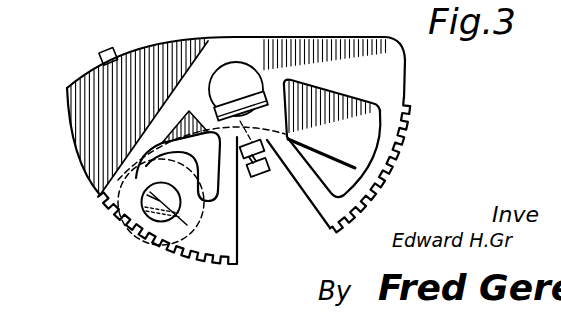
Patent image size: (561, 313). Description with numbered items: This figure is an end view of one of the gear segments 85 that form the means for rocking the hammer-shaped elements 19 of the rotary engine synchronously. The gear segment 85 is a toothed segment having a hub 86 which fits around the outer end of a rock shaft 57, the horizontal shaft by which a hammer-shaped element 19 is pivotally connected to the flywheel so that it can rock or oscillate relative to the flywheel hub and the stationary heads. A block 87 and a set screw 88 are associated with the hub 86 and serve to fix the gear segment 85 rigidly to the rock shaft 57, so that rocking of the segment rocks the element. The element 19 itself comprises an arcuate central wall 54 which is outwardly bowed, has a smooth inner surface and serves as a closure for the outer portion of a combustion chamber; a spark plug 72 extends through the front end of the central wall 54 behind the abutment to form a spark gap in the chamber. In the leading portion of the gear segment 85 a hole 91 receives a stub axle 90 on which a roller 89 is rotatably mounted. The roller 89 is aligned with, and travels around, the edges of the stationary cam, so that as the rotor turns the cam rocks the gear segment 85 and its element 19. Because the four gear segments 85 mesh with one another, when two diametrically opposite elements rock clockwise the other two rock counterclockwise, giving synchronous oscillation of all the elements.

The hammer-shaped element 19 is at (351, 44).
The arcuate central wall 54 is at (328, 158).
The rock shaft 57 is at (238, 98).
The spark plug 72 is at (100, 58).
The gear segment 85 is at (395, 125).
The hub 86 is at (232, 47).
The block 87 is at (246, 76).
The set screw 88 is at (258, 175).
The roller 89 is at (138, 228).
The stub axle 90 is at (160, 195).
The hole 91 is at (143, 188).